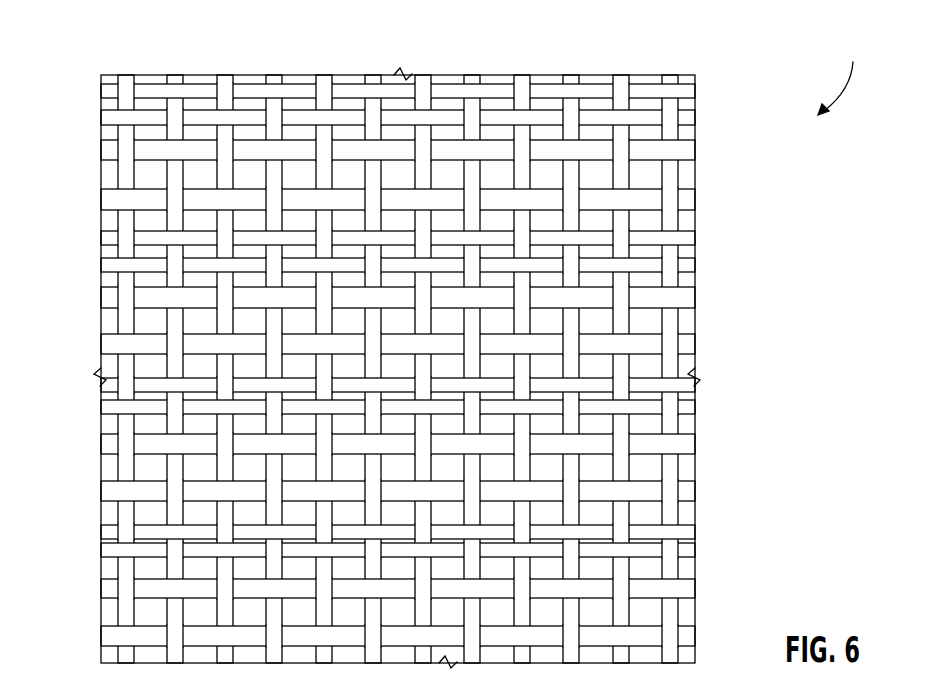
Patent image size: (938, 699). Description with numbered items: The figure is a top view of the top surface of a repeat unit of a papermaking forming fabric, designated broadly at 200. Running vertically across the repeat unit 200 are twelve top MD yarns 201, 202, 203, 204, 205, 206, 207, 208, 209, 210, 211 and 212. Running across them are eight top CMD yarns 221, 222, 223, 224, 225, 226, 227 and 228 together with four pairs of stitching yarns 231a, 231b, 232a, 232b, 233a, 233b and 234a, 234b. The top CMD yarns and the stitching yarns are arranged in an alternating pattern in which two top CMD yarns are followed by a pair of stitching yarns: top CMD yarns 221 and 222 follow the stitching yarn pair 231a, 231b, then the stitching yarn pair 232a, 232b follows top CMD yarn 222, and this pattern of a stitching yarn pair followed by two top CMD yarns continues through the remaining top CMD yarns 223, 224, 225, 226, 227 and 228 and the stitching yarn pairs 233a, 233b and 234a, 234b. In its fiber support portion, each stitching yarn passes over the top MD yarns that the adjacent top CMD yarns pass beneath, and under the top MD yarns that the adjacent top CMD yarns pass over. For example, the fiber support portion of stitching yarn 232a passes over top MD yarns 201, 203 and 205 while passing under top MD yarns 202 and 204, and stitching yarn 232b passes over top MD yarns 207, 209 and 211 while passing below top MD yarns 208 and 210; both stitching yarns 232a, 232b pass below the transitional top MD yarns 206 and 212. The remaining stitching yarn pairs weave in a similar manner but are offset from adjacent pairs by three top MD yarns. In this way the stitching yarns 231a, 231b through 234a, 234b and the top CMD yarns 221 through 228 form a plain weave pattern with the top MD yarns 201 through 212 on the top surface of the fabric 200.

The repeat unit of forming fabric 200 is at (847, 69).
The top MD yarn 201 is at (125, 75).
The top MD yarn 202 is at (176, 75).
The top MD yarn 203 is at (226, 75).
The top MD yarn 204 is at (274, 75).
The top MD yarn 205 is at (324, 75).
The transitional top MD yarn 206 is at (372, 75).
The top MD yarn 207 is at (422, 75).
The top MD yarn 208 is at (472, 75).
The top MD yarn 209 is at (522, 75).
The top MD yarn 210 is at (571, 75).
The top MD yarn 211 is at (621, 75).
The transitional top MD yarn 212 is at (671, 75).
The top CMD yarn 221 is at (688, 152).
The top CMD yarn 222 is at (688, 200).
The top CMD yarn 223 is at (688, 298).
The top CMD yarn 224 is at (688, 347).
The top CMD yarn 225 is at (688, 446).
The top CMD yarn 226 is at (688, 490).
The top CMD yarn 227 is at (688, 587).
The top CMD yarn 228 is at (688, 636).
The stitching yarn 231a is at (688, 97).
The stitching yarn 231b is at (195, 132).
The stitching yarn 232a is at (688, 242).
The stitching yarn 232b is at (688, 264).
The stitching yarn 233a is at (245, 387).
The stitching yarn 233b is at (688, 405).
The stitching yarn 234a is at (640, 531).
The stitching yarn 234b is at (688, 551).